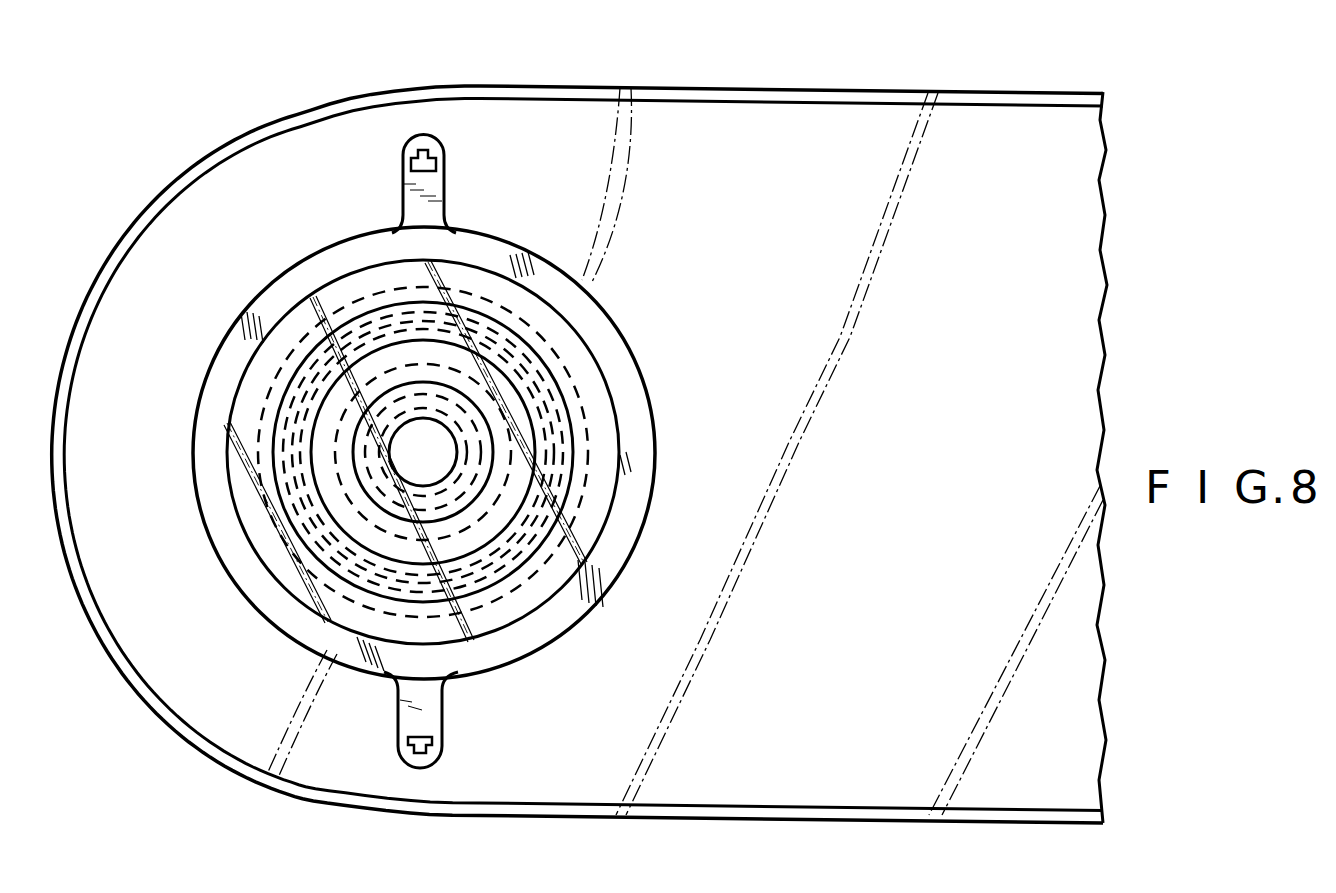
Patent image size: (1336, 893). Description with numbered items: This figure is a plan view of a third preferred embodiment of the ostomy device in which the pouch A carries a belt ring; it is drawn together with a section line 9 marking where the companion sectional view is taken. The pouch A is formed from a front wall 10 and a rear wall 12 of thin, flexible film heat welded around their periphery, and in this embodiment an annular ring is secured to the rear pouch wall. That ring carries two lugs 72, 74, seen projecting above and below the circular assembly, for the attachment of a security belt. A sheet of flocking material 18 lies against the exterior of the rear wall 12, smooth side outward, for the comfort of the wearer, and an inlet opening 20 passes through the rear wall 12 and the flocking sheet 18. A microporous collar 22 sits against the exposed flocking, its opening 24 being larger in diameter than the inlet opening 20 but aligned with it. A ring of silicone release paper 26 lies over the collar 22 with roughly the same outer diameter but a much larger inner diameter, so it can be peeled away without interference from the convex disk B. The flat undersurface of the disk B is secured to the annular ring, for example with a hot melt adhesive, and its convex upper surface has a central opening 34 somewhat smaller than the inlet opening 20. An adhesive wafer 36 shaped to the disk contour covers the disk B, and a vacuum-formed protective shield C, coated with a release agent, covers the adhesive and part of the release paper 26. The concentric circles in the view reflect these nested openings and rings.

The section line 9- 9 is at (422, 42).
The front wall 10 is at (1082, 387).
The rear wall 12 is at (1068, 206).
The flocking material 18 is at (985, 168).
The inlet opening 20 is at (465, 456).
The microporous collar 22 is at (610, 382).
The opening 24 is at (575, 510).
The silicone release paper 26 is at (575, 345).
The central opening 34 is at (493, 448).
The adhesive wafer 36 is at (517, 572).
The lug 72 is at (435, 152).
The lug 74 is at (440, 716).
The pouch A is at (1104, 285).
The convex disk B is at (531, 336).
The shield C is at (492, 266).